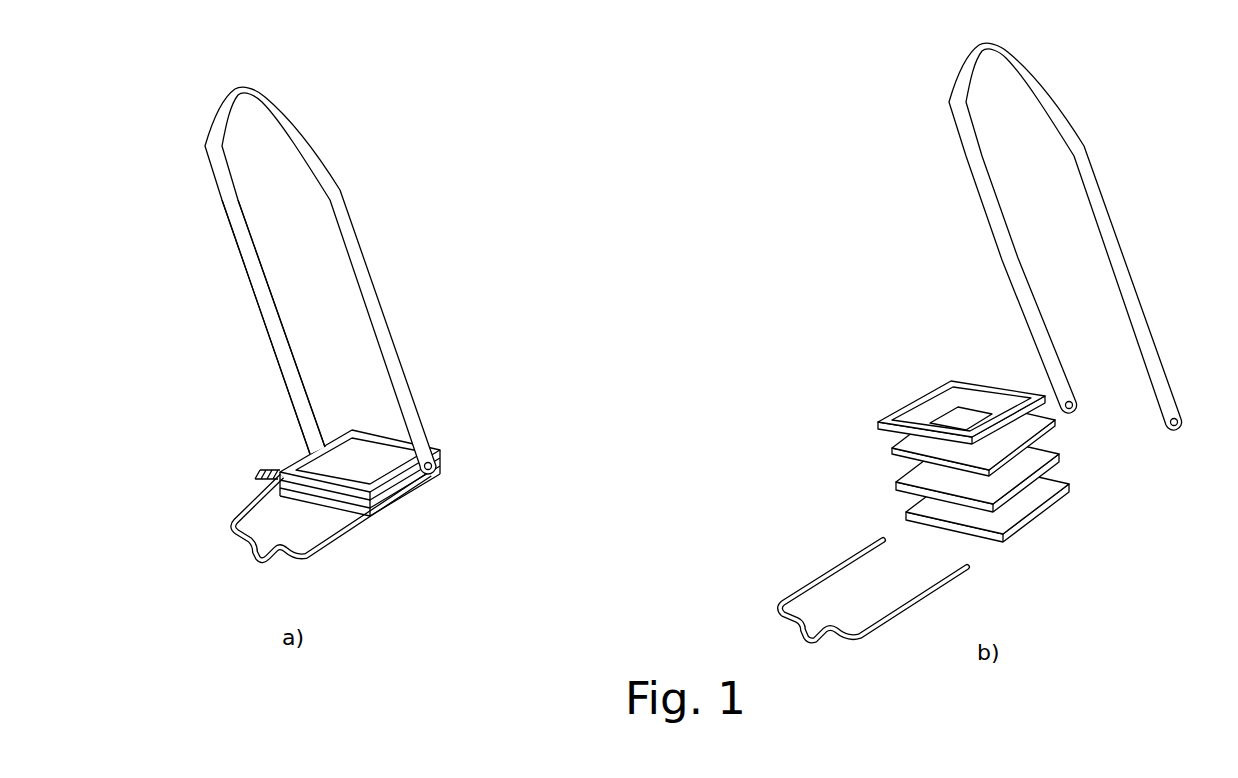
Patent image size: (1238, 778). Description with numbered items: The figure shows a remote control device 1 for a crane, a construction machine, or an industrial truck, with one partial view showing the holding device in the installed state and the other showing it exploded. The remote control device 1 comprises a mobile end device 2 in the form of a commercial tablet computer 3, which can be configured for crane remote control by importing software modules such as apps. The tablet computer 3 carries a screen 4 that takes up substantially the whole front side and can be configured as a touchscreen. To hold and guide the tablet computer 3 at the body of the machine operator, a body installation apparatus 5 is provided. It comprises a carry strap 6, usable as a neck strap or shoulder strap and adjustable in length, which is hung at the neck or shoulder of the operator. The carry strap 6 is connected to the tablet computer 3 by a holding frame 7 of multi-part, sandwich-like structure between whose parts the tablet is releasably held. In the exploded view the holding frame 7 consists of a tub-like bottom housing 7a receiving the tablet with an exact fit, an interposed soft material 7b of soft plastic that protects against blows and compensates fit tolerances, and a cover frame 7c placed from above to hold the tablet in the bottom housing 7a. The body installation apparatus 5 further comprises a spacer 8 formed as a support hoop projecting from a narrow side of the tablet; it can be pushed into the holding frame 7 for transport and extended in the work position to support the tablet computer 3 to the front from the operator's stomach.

The remote control device 1 is at (684, 341).
The mobile end device 2 is at (272, 476).
The tablet computer 3 is at (374, 463).
The screen 4 is at (351, 427).
The body installation apparatus 5 is at (263, 314).
The carry strap 6 is at (684, 258).
The holding frame 7 is at (656, 440).
The bottom housing 7a is at (426, 488).
The soft material 7b is at (450, 452).
The cover frame 7c is at (662, 414).
The spacer 8 is at (371, 531).